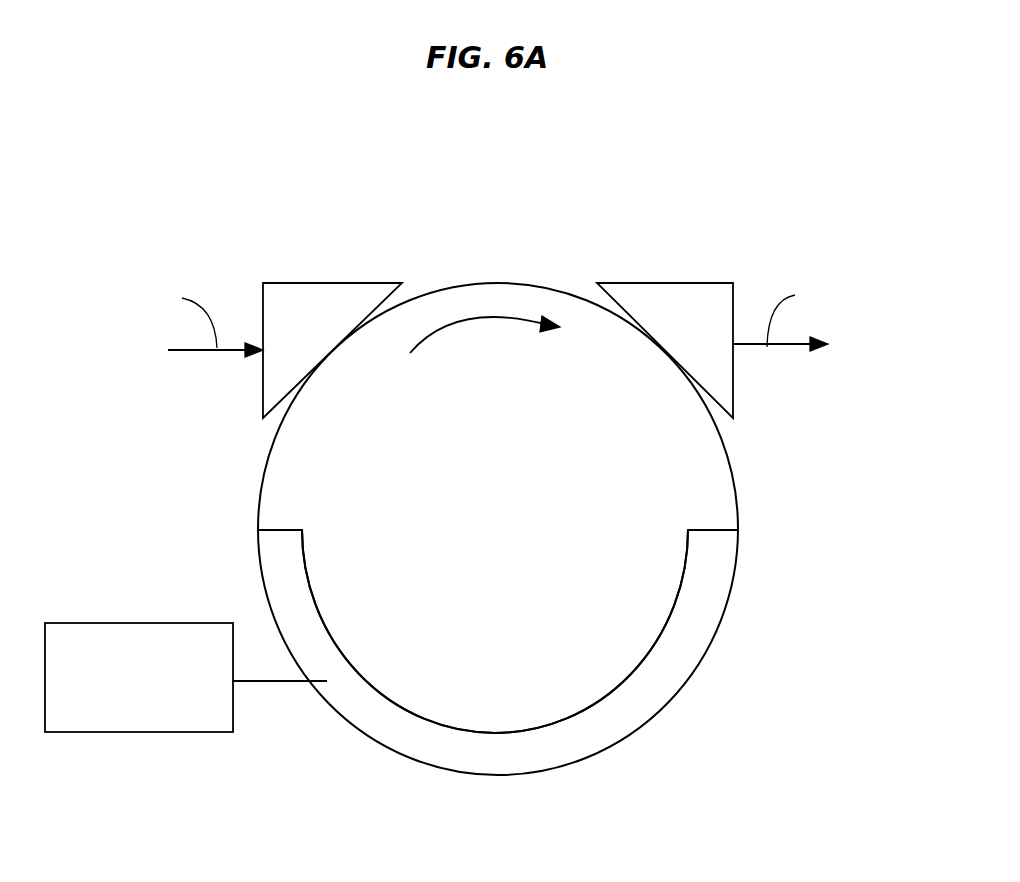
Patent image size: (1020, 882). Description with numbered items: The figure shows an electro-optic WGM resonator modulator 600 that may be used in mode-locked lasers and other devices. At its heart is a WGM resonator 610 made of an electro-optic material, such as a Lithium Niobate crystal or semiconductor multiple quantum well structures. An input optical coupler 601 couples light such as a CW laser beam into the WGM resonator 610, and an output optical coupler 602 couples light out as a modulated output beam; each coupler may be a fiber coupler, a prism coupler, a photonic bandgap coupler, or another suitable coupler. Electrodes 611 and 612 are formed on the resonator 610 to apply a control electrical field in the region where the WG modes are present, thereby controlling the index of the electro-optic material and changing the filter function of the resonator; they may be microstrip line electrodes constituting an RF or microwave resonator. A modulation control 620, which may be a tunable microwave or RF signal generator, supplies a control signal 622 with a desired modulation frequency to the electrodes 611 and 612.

The electro-optic WGM resonator modulator 600 is at (435, 210).
The input optical coupler 601 is at (360, 283).
The output optical coupler 602 is at (630, 283).
The WGM resonator 610 is at (730, 472).
The electrode 611 is at (733, 583).
The electrode 612 is at (498, 631).
The modulation control 620 is at (188, 735).
The control signal 622 is at (272, 685).